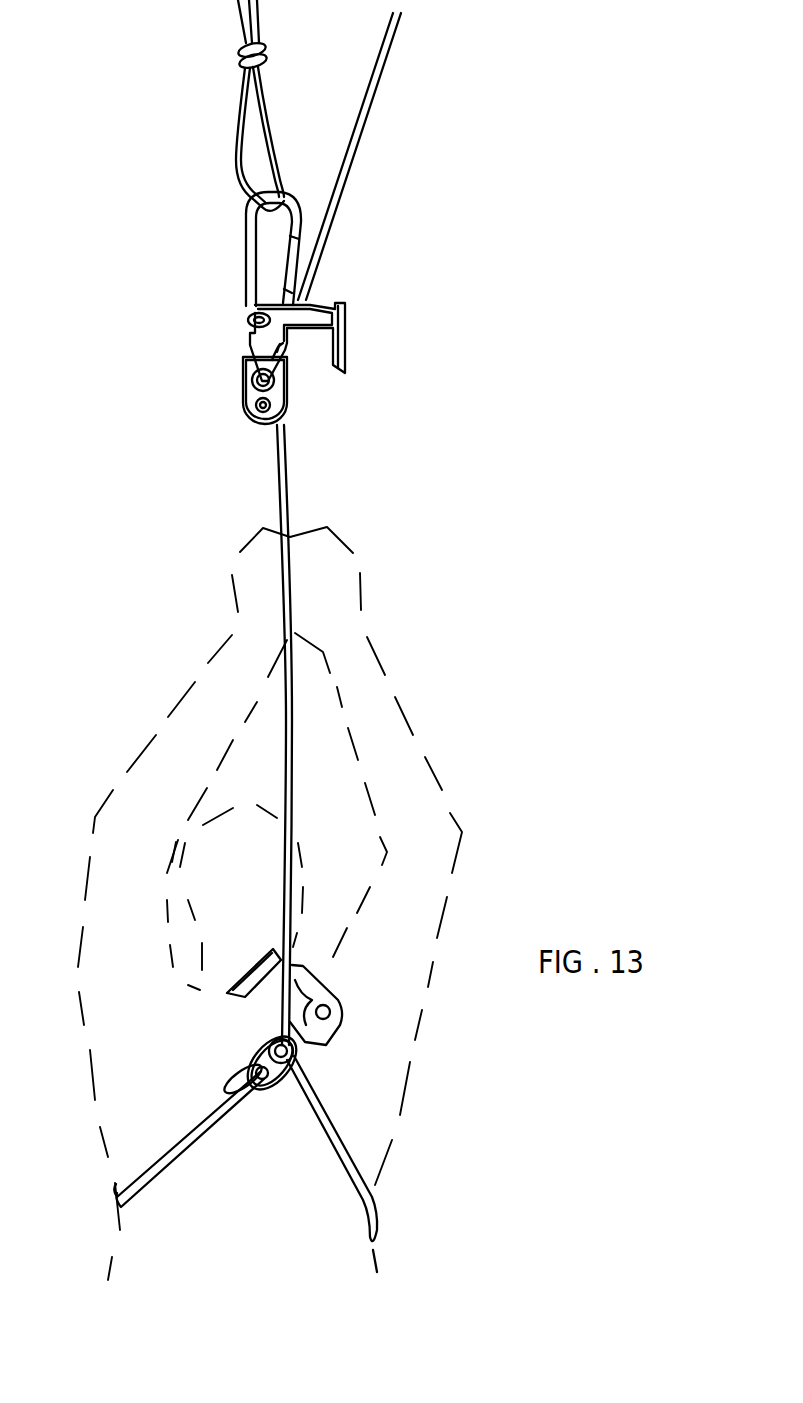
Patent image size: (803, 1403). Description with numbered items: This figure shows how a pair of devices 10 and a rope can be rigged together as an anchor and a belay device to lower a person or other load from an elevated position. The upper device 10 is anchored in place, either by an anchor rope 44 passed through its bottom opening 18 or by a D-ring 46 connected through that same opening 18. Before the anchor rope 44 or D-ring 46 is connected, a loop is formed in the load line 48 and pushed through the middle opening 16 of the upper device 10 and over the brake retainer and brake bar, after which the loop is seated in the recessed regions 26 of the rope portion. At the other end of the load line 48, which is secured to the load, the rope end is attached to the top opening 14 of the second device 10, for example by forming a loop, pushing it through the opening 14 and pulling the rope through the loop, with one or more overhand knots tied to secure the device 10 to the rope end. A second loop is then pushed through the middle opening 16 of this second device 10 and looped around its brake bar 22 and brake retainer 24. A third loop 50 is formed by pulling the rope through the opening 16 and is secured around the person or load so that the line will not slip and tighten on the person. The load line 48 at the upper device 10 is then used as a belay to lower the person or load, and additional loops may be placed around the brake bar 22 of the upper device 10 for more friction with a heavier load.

The device 10 is at (358, 355).
The opening 14 is at (270, 1097).
The middle opening 16 is at (247, 390).
The opening 18 is at (250, 327).
The brake bar 22 is at (323, 1000).
The brake retainer 24 is at (253, 967).
The recessed region 26 is at (283, 353).
The anchor rope 44 is at (238, 135).
The D-ring 46 is at (245, 257).
The load line 48 is at (345, 181).
The third loop 50 is at (375, 1212).